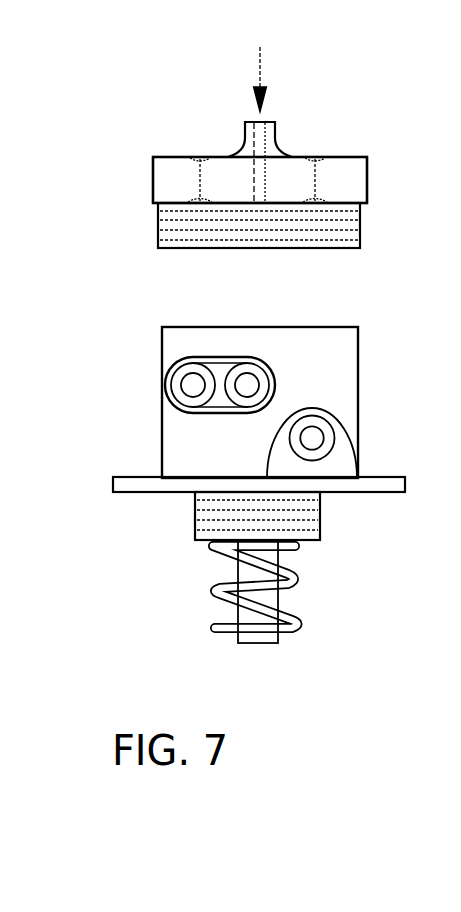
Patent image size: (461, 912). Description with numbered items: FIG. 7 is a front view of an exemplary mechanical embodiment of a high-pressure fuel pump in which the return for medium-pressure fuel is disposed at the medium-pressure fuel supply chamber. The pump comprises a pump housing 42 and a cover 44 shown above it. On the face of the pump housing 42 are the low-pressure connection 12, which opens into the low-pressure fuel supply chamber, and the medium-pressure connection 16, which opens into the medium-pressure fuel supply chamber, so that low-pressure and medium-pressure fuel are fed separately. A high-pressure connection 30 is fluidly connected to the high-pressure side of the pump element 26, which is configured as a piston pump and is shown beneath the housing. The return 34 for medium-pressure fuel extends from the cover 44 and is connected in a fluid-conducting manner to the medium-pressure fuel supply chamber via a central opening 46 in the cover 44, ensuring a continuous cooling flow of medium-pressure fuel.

The low-pressure connection 12 is at (193, 373).
The medium-pressure connection 16 is at (245, 373).
The pump element 26 is at (203, 512).
The high-pressure connection 30 is at (312, 428).
The return 34 is at (272, 148).
The pump housing 42 is at (160, 438).
The cover 44 is at (355, 185).
The central opening 46 is at (261, 65).